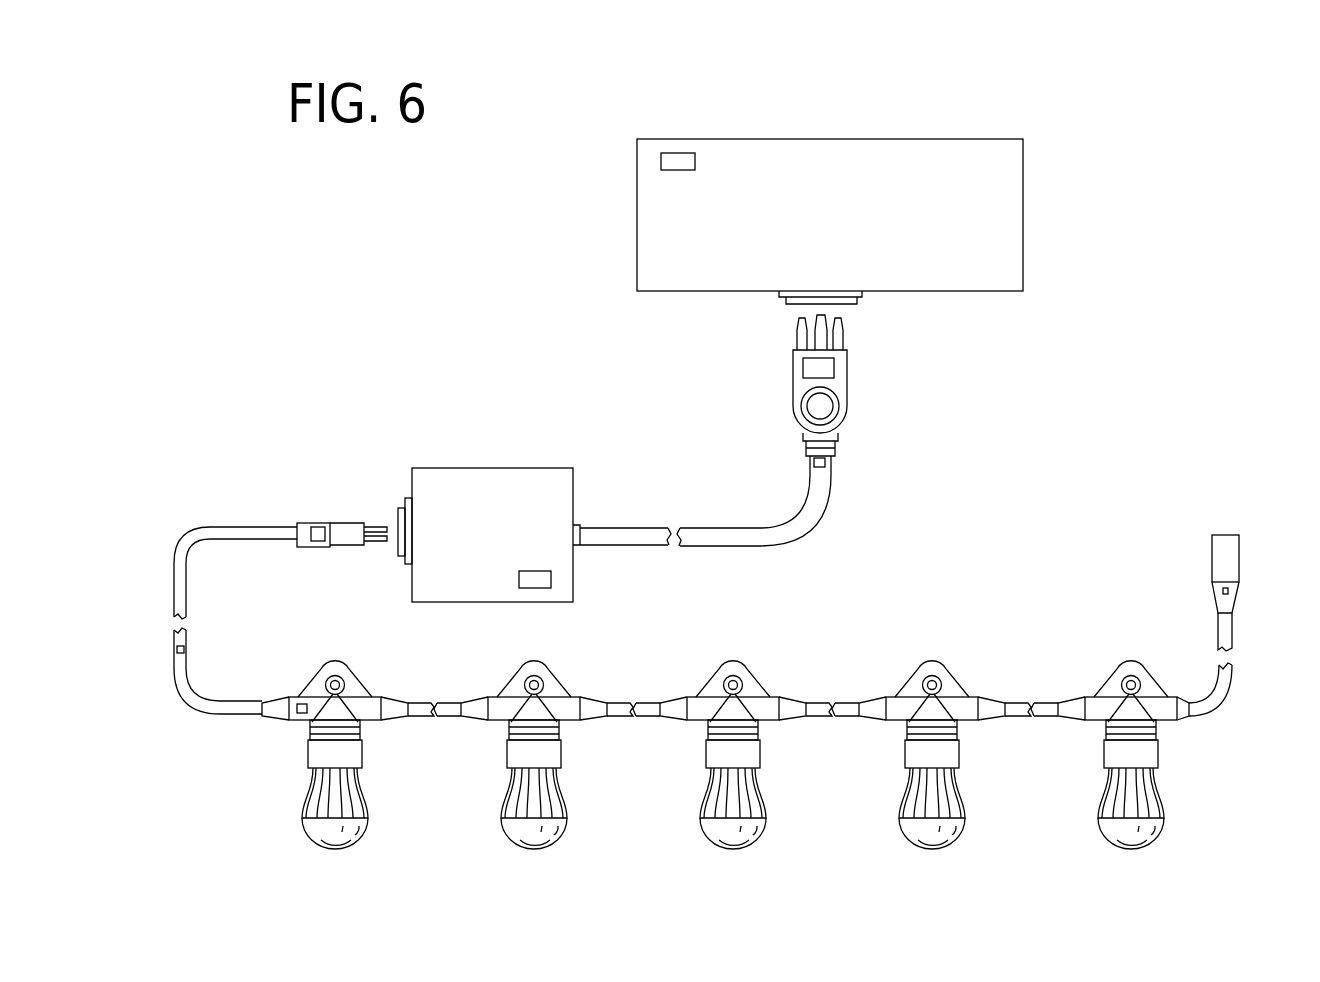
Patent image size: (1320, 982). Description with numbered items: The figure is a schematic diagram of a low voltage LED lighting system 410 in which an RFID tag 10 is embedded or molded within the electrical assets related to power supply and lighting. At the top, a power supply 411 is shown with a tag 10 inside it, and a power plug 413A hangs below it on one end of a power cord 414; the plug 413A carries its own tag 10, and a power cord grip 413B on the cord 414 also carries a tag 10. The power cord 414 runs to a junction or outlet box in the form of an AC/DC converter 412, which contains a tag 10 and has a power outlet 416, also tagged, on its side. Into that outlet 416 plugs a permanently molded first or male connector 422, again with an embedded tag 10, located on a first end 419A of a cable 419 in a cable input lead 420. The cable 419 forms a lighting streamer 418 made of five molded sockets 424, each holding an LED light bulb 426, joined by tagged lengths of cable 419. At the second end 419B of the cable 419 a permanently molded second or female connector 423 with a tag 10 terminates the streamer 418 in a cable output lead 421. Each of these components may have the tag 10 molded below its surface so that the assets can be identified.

The tag 10 is at (688, 153).
The low voltage LED lighting system 410 is at (450, 221).
The power supply 411 is at (1023, 262).
The AC/DC converter 412 is at (493, 468).
The power plug 413A is at (847, 358).
The power cord grip 413B is at (838, 452).
The power cord 414 is at (828, 510).
The power outlet 416 is at (400, 560).
The lighting streamer 418 is at (746, 629).
The cable 419 is at (218, 700).
The first end 419A is at (188, 720).
The second end 419B is at (1205, 728).
The cable input lead 420 is at (186, 585).
The end connector cord 421 is at (1218, 636).
The first or male connector 422 is at (304, 548).
The second or female connector 423 is at (1212, 562).
The molded socket 424 is at (362, 757).
The LED light bulb 426 is at (368, 804).